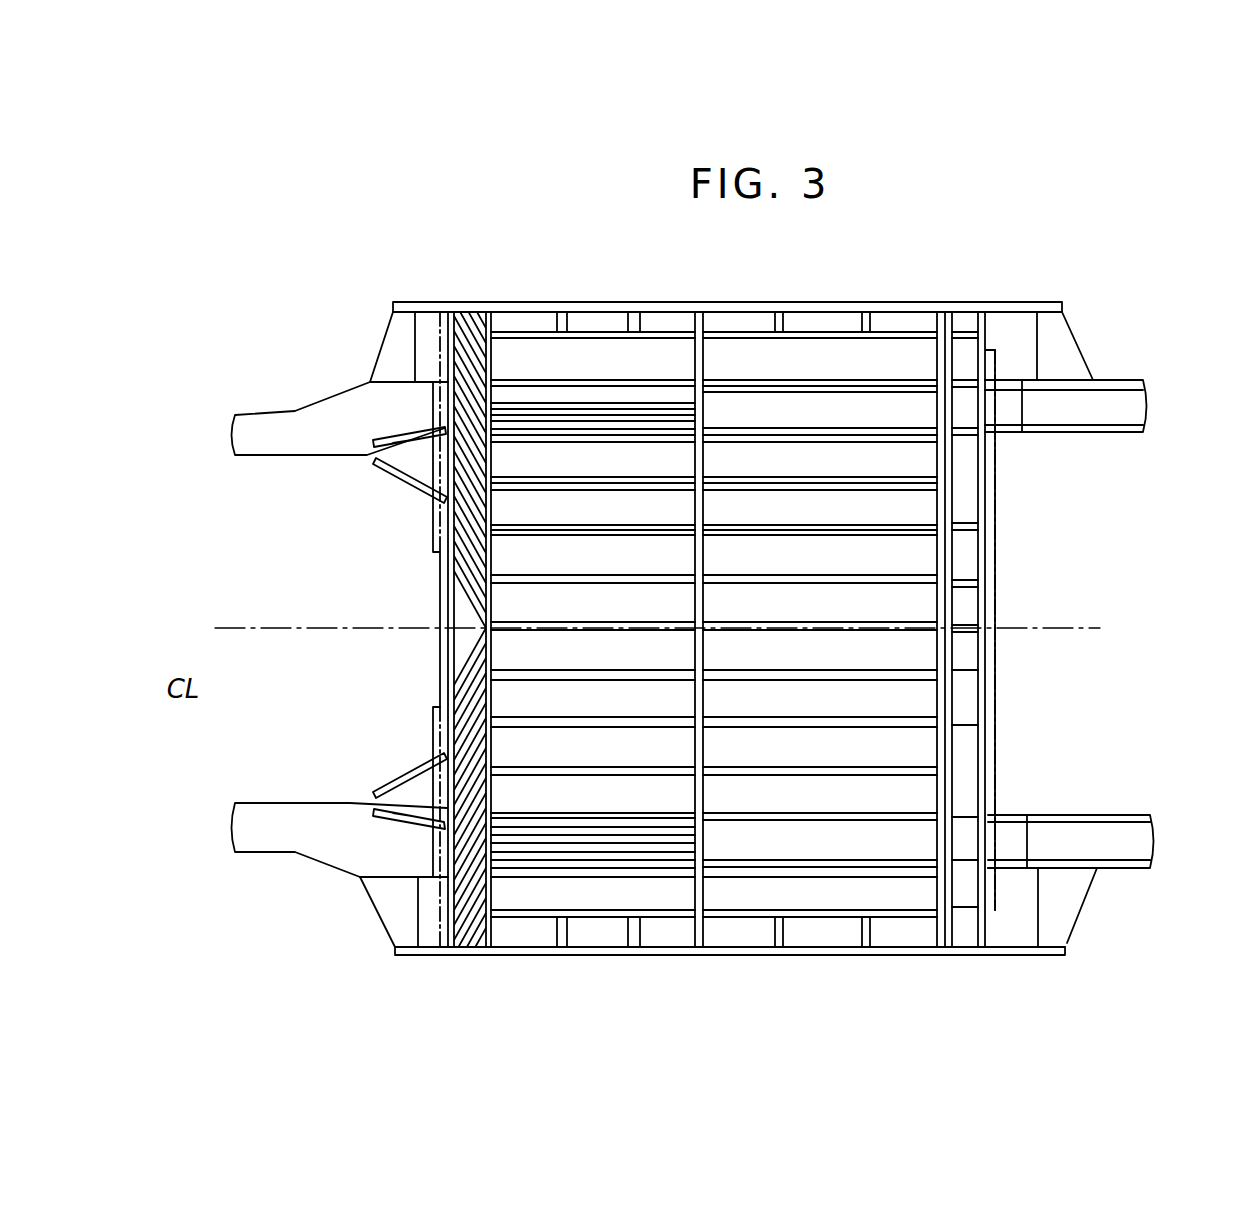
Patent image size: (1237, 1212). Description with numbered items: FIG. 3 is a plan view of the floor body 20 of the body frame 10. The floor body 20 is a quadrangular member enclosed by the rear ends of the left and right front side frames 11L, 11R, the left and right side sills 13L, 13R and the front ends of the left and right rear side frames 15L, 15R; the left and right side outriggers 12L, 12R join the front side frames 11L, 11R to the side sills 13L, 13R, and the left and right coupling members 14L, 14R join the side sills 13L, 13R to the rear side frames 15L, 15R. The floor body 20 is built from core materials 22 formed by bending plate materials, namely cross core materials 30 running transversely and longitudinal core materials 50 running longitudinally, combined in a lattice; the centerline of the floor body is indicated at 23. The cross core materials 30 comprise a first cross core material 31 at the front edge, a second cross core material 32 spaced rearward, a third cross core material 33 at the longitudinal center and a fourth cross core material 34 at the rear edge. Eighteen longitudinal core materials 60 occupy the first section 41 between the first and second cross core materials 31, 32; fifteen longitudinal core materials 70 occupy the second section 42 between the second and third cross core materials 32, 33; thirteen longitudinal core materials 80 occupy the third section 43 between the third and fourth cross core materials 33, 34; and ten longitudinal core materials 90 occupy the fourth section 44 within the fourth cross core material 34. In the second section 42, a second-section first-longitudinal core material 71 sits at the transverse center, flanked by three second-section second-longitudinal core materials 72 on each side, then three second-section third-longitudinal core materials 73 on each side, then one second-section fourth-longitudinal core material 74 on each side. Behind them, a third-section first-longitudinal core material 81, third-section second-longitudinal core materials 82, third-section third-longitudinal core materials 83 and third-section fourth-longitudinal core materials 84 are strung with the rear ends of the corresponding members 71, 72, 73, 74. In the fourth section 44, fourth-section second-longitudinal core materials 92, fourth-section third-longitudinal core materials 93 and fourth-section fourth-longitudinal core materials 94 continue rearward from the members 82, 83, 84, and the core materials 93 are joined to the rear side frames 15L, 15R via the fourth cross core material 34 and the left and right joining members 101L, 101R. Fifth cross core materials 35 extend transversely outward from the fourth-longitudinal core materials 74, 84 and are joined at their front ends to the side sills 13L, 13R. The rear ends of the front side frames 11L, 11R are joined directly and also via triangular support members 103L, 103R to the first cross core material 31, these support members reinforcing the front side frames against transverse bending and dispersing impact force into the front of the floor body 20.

The body frame 10 is at (232, 300).
The right front side frame 11R is at (247, 418).
The left front side frame 11L is at (262, 848).
The right side outrigger 12R is at (385, 347).
The left side outrigger 12L is at (383, 905).
The right side sill 13R is at (400, 305).
The left side sill 13L is at (437, 950).
The right coupling member 14R is at (1075, 345).
The left coupling member 14L is at (1077, 912).
The right rear side frame 15R is at (1125, 388).
The left rear side frame 15L is at (1130, 870).
The floor body 20 is at (425, 534).
The core materials 22 is at (388, 605).
The front cross member center line 23 is at (433, 580).
The cross core materials 30 is at (443, 342).
The first cross core material 31 is at (450, 340).
The second cross core material 32 is at (493, 330).
The third cross core material 33 is at (698, 322).
The fourth cross core material 34 is at (941, 320).
The fifth cross core materials 35 is at (634, 320).
The first section 41 is at (468, 308).
The second section 42 is at (543, 310).
The third section 43 is at (760, 310).
The fourth section 44 is at (964, 310).
The longitudinal core materials 50 is at (455, 673).
The longitudinal core materials 60 is at (465, 720).
The longitudinal core materials 70 is at (593, 624).
The second-section first-longitudinal core material 71 is at (605, 622).
The second-section second-longitudinal core materials 72 is at (570, 480).
The second-section third-longitudinal core materials 73 is at (560, 380).
The second-section fourth-longitudinal core materials 74 is at (575, 341).
The longitudinal core materials 80 is at (820, 624).
The third-section first-longitudinal core material 81 is at (848, 622).
The third-section second-longitudinal core materials 82 is at (838, 480).
The third-section third-longitudinal core materials 83 is at (830, 385).
The third-section fourth-longitudinal core materials 84 is at (830, 341).
The longitudinal core materials 90 is at (968, 665).
The fourth-section second-longitudinal core materials 92 is at (972, 531).
The fourth-section third-longitudinal core materials 93 is at (962, 440).
The fourth-section fourth-longitudinal core materials 94 is at (1005, 306).
The right joining member 101R is at (1010, 420).
The left joining member 101L is at (1012, 832).
The right support member 103R is at (405, 462).
The left support member 103L is at (392, 790).